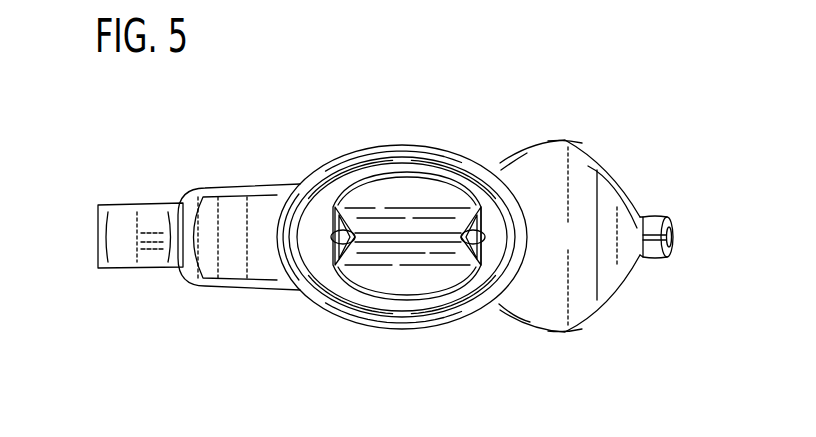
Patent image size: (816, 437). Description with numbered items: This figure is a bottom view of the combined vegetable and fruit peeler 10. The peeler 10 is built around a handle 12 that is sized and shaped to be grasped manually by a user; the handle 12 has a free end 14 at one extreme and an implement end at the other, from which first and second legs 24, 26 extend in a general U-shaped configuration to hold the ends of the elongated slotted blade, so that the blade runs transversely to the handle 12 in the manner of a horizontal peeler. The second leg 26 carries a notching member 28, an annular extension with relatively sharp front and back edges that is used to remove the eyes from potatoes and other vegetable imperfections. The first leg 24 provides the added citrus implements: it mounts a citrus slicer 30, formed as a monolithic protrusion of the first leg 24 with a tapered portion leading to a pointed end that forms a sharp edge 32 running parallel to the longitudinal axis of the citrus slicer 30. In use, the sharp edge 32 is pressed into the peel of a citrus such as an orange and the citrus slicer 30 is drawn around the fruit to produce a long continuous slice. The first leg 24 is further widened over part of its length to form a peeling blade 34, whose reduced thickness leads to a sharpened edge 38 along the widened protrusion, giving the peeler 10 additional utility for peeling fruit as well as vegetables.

The combined vegetable and fruit peeler 10 is at (633, 75).
The handle 12 is at (380, 145).
The free end 14 is at (407, 330).
The first leg 24 is at (622, 193).
The second leg 26 is at (210, 288).
The notching member 28 is at (97, 237).
The citrus slicer 30 is at (676, 238).
The sharp edge 32 is at (652, 257).
The peeling blade 34 is at (580, 180).
The sharpened edge 38 is at (577, 142).